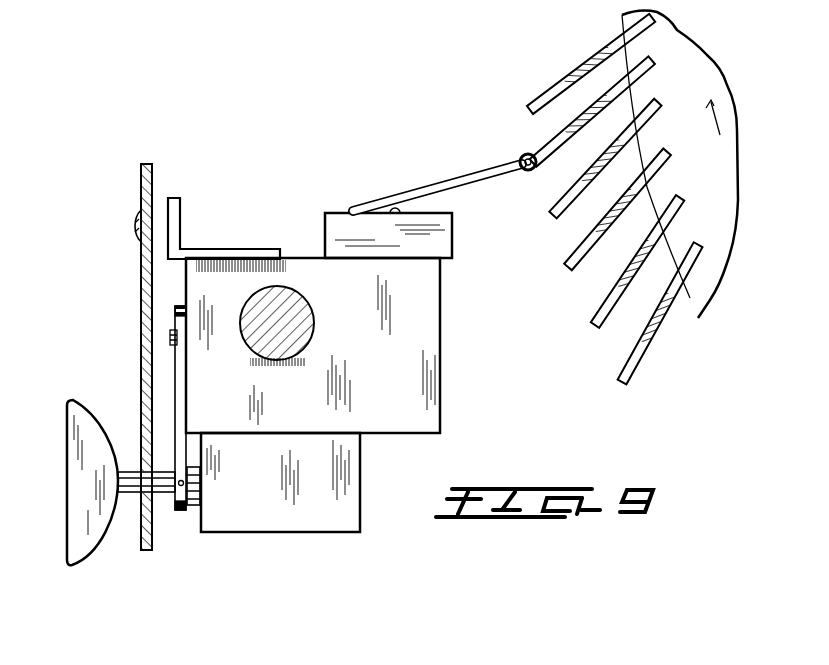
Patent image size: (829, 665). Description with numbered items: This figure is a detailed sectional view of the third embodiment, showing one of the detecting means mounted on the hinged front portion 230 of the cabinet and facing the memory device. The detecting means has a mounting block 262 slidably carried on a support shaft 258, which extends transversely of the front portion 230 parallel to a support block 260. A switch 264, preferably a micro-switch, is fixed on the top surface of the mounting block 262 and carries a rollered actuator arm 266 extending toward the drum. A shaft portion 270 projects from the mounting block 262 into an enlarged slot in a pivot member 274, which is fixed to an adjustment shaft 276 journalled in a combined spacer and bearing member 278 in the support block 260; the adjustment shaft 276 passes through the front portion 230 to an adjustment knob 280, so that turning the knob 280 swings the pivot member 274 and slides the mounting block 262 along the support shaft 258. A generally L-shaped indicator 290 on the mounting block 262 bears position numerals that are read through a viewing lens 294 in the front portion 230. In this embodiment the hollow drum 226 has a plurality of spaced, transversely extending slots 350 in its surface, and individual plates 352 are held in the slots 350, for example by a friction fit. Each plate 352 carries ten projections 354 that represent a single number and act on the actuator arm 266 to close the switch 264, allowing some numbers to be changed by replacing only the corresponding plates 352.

The hollow drum 226 is at (632, 218).
The hinged front portion 230 is at (141, 343).
The support shaft 258 is at (306, 306).
The support block 260 is at (337, 535).
The mounting block 262 is at (434, 436).
The switch 264 is at (452, 249).
The rollered actuator arm 266 is at (451, 181).
The shaft portion 270 is at (170, 333).
The pivot member 274 is at (181, 411).
The adjustment shaft 276 is at (130, 497).
The combined spacer and bearing member 278 is at (193, 507).
The adjustment knob 280 is at (67, 565).
The L-shaped indicator 290 is at (182, 227).
The viewing lens 294 is at (140, 212).
The slot 350 is at (669, 221).
The plate 352 is at (601, 245).
The projection 354 is at (625, 386).